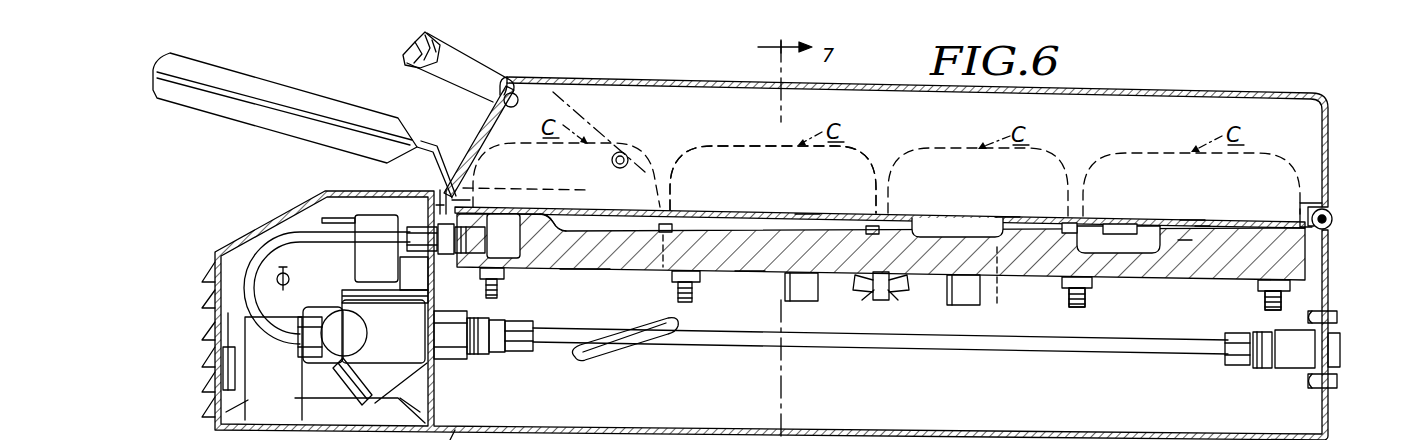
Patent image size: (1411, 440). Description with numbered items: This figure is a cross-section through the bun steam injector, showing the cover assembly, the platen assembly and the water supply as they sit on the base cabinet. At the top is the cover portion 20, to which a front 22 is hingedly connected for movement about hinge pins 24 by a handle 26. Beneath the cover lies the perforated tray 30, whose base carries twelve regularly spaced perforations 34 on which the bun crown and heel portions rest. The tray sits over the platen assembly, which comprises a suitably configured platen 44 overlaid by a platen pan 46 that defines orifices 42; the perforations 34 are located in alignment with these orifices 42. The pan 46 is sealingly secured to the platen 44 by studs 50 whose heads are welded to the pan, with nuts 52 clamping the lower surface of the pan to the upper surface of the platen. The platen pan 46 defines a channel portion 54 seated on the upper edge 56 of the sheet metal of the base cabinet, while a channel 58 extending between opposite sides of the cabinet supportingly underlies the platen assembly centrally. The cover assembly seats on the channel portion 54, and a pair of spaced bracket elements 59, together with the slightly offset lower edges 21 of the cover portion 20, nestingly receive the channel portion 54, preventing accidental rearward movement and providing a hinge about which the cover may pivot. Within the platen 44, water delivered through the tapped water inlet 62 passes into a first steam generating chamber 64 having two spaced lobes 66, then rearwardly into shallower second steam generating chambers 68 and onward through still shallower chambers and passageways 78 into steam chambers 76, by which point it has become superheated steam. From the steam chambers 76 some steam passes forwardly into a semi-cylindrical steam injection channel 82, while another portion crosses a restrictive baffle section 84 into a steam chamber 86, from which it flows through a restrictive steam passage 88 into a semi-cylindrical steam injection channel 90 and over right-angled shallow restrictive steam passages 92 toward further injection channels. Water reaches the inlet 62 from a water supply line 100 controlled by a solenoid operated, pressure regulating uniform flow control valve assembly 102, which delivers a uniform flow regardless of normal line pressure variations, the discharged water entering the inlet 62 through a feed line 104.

The cover portion 20 is at (1218, 90).
The lower edges 21 is at (1332, 229).
The front 22 is at (478, 123).
The hinge pins 24 is at (626, 153).
The handle 26 is at (468, 70).
The perforated tray 30 is at (700, 212).
The perforations 34 is at (808, 213).
The orifices 42 is at (560, 210).
The platen 44 is at (1312, 262).
The platen pan 46 is at (577, 208).
The studs 50 is at (1082, 300).
The nuts 52 is at (700, 281).
The channel portion 54 is at (1330, 212).
The upper edge 56 is at (1332, 219).
The channel 58 is at (918, 292).
The bracket elements 59 is at (1300, 203).
The water inlet 62 is at (464, 258).
The first steam generating chamber 64 is at (498, 254).
The lobes 66 is at (590, 273).
The second steam generating chambers 68 is at (750, 274).
The steam chambers 76 is at (1003, 287).
The passageways 78 is at (978, 303).
The steam injection channel 82 is at (905, 220).
The restrictive baffle section 84 is at (1075, 218).
The steam chamber 86 is at (1115, 250).
The restrictive steam passage 88 is at (1167, 218).
The steam injection channel 90 is at (1182, 253).
The restrictive steam passages 92 is at (1120, 222).
The water supply line 100 is at (1040, 345).
The valve assembly 102 is at (400, 308).
The feed line 104 is at (298, 243).